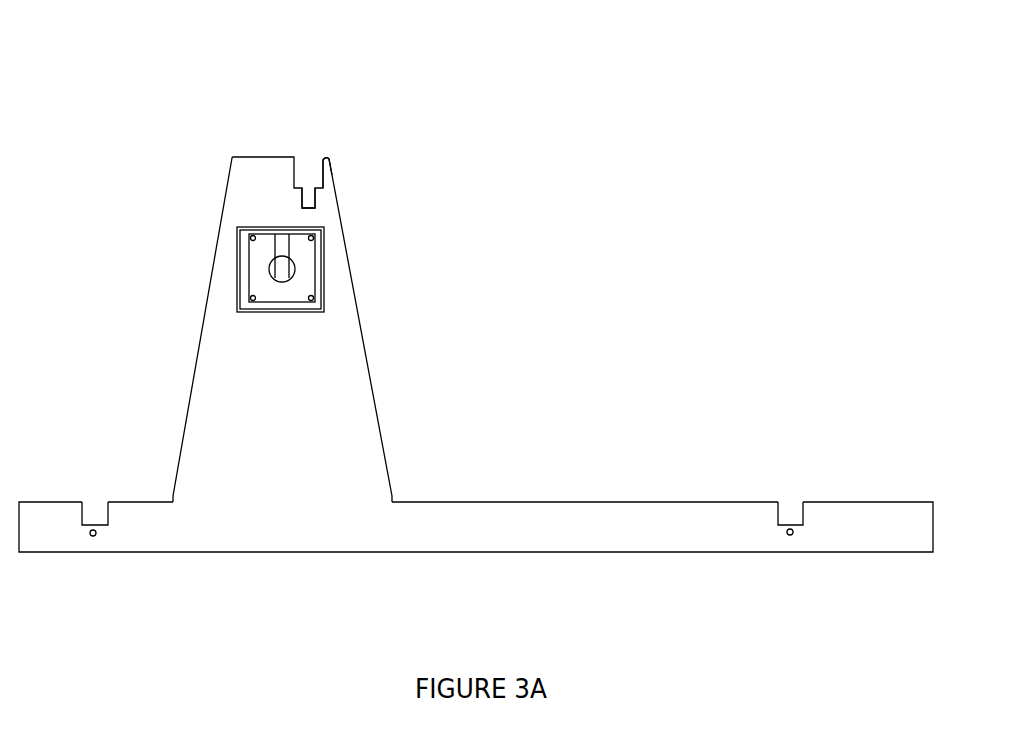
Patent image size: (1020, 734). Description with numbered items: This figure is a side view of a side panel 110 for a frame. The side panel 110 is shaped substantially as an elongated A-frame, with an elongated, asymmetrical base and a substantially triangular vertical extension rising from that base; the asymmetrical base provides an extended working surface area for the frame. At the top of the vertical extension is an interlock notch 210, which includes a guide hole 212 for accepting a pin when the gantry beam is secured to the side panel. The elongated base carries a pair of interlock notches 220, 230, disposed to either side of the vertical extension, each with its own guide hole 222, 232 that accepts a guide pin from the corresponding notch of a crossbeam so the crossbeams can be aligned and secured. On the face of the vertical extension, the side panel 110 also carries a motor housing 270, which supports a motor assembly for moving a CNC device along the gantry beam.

The side panel 110 is at (220, 370).
The interlock notch 210 is at (309, 172).
The guide hole 212 is at (310, 198).
The motor housing 270 is at (300, 270).
The interlock notch 220 is at (96, 508).
The guide hole 222 is at (95, 535).
The interlock notch 230 is at (789, 513).
The guide hole 232 is at (788, 535).